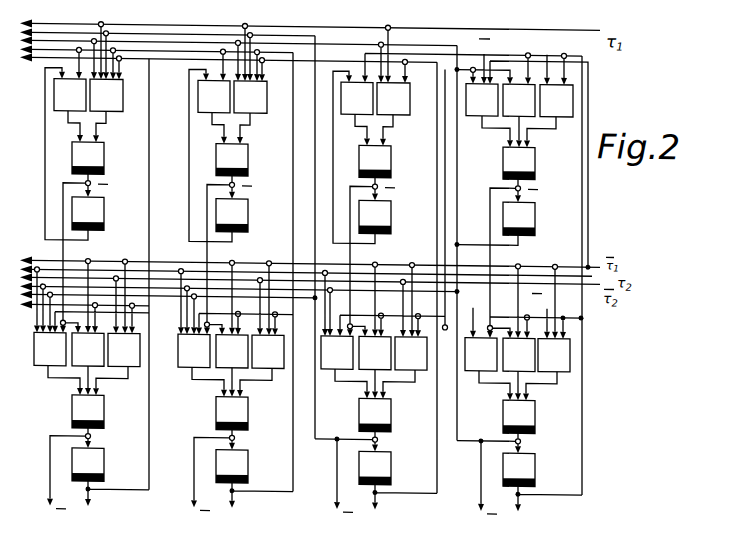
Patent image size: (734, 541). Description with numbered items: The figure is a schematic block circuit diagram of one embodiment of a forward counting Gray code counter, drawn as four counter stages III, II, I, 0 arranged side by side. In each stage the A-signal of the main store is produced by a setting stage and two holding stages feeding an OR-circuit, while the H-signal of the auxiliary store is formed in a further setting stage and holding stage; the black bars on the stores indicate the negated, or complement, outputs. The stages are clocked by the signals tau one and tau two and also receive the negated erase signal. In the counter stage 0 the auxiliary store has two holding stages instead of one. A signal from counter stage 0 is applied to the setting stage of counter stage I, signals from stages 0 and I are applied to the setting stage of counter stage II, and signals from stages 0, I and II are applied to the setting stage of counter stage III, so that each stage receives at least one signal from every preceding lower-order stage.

The counter stage III is at (91, 275).
The counter stage II is at (235, 277).
The counter stage I is at (448, 279).
The counter stage 0 is at (522, 287).